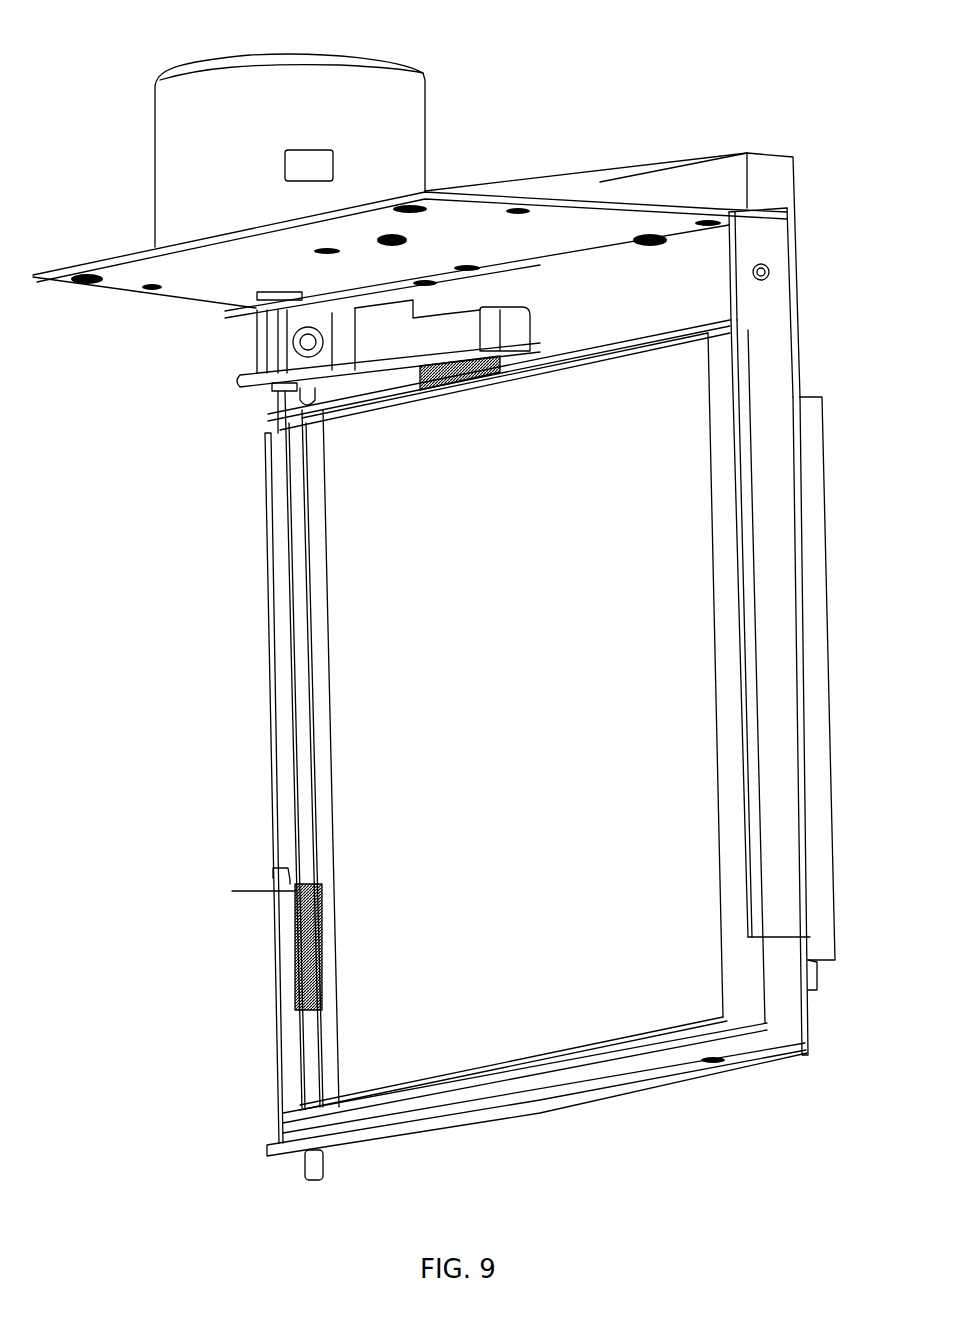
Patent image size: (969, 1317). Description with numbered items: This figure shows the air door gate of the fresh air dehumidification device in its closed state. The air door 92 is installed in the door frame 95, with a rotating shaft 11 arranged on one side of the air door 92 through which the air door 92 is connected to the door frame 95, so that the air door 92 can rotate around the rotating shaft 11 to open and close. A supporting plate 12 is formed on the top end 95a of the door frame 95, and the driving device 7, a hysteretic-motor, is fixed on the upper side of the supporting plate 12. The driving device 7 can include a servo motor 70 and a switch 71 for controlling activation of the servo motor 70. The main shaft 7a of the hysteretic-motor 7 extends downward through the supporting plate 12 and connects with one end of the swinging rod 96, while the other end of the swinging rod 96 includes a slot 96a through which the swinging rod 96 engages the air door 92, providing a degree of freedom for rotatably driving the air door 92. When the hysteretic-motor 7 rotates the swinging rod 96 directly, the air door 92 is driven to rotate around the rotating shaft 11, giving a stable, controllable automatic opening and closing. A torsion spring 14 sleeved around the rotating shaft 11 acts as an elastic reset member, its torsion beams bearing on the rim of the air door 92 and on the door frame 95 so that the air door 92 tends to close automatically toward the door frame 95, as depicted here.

The driving device 7 is at (213, 160).
The main shaft 7a is at (256, 306).
The rotating shaft 11 is at (292, 750).
The supporting plate 12 is at (133, 253).
The torsion spring 14 is at (297, 923).
The servo motor 70 is at (310, 97).
The switch 71 is at (310, 165).
The air door 92 is at (420, 605).
The door frame 95 is at (772, 625).
The top end 95a is at (763, 240).
The swinging rod 96 is at (437, 332).
The slot 96a is at (490, 332).